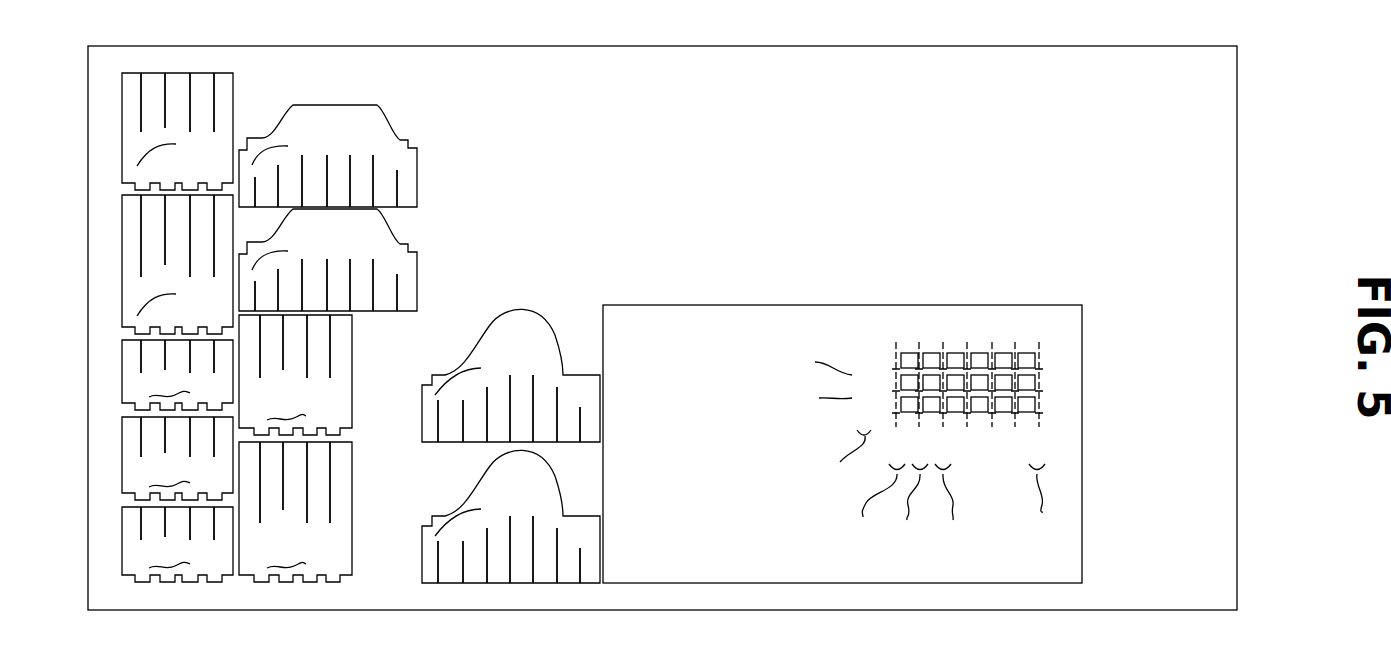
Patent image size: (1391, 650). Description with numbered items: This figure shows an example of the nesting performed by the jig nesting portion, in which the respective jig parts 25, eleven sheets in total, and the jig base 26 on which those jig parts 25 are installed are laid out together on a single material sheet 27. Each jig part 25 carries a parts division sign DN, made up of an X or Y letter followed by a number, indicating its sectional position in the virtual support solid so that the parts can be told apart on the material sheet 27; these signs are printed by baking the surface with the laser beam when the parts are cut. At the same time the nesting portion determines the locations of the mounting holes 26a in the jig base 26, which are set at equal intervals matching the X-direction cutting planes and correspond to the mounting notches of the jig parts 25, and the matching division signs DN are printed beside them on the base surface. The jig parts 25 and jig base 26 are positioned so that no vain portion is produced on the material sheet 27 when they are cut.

The jig parts 25 is at (133, 120).
The jig base 26 is at (730, 313).
The mounting hole 26a is at (897, 350).
The material sheet 27 is at (1222, 153).